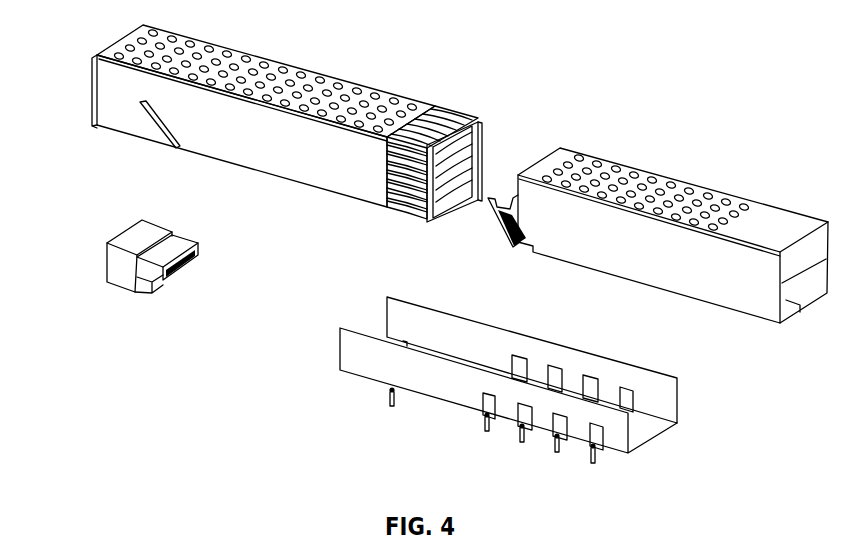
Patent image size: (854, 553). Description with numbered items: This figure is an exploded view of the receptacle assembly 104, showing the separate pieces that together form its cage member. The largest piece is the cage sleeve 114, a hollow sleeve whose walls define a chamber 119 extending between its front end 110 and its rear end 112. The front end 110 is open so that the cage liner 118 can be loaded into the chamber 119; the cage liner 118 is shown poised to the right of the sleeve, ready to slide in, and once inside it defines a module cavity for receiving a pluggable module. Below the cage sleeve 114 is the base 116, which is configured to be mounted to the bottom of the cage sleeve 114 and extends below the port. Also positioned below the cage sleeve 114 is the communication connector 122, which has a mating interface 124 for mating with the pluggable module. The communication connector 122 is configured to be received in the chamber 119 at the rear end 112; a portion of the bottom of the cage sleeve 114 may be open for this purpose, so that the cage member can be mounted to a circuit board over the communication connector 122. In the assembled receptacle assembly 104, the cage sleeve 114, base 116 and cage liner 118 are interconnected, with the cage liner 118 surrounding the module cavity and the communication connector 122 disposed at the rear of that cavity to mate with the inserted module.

The receptacle assembly 104 is at (508, 100).
The front end 110 is at (442, 218).
The rear end 112 is at (92, 95).
The cage sleeve 114 is at (283, 157).
The base 116 is at (457, 395).
The cage liner 118 is at (633, 260).
The chamber 119 is at (486, 149).
The communication connector 122 is at (123, 283).
The mating interface 124 is at (200, 267).